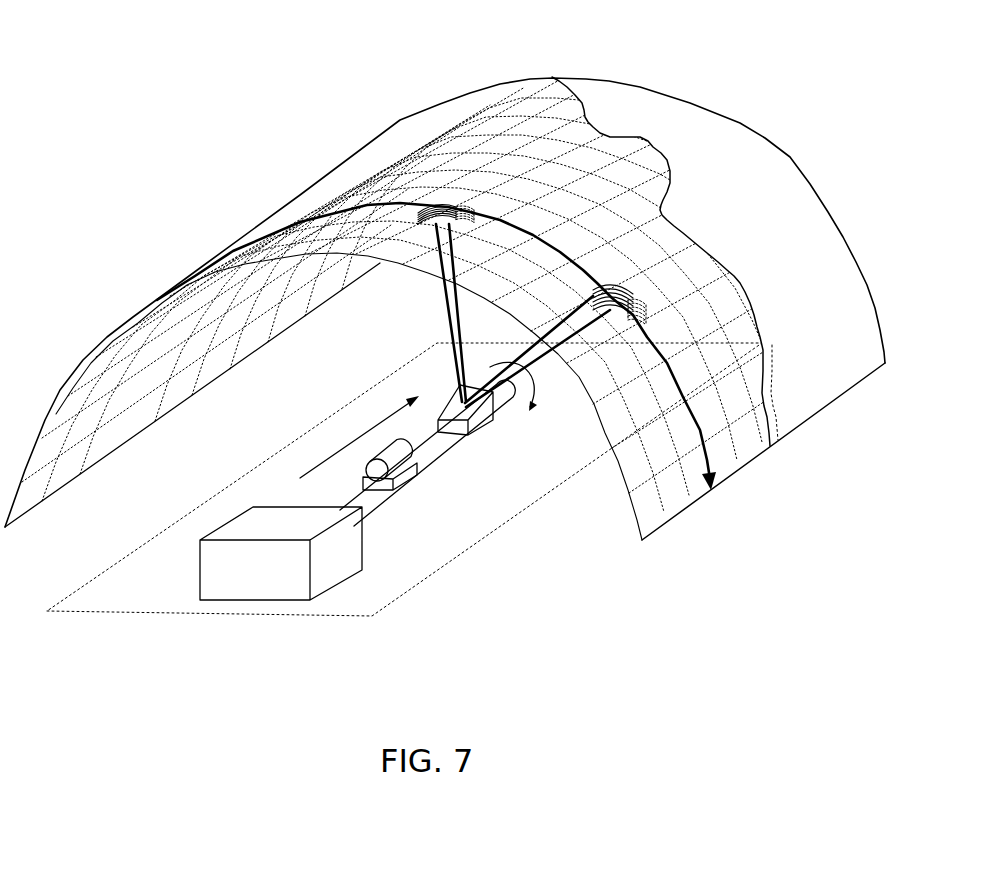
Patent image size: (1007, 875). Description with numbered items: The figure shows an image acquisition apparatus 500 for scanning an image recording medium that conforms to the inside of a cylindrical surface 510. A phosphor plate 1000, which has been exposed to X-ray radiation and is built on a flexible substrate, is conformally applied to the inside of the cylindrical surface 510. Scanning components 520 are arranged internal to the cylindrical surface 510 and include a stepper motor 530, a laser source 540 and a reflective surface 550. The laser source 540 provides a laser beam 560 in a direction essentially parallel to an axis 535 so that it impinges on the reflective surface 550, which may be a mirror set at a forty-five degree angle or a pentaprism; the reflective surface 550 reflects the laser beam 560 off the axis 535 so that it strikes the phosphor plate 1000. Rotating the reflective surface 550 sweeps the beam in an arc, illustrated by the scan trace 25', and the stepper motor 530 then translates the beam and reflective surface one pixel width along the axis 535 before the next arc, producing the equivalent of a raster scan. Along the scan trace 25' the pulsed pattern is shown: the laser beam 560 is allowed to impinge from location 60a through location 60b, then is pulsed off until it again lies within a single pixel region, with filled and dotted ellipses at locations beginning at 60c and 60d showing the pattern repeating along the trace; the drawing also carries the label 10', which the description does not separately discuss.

The image acquisition apparatus 500 is at (168, 57).
The cylindrical surface 510 is at (838, 370).
The scanning components 520 is at (410, 588).
The stepper motor 530 is at (200, 566).
The axis 535 is at (373, 428).
The laser source 540 is at (403, 453).
The reflective surface 550 is at (490, 406).
The laser beam 560 is at (468, 456).
The location 60a is at (440, 213).
The location 60b is at (468, 212).
The location 60c is at (606, 287).
The sensor patch 60d is at (632, 300).
The scan trace 25' is at (436, 346).
The inner pipe surface 10' is at (450, 295).
The phosphor plate 1000 is at (680, 513).